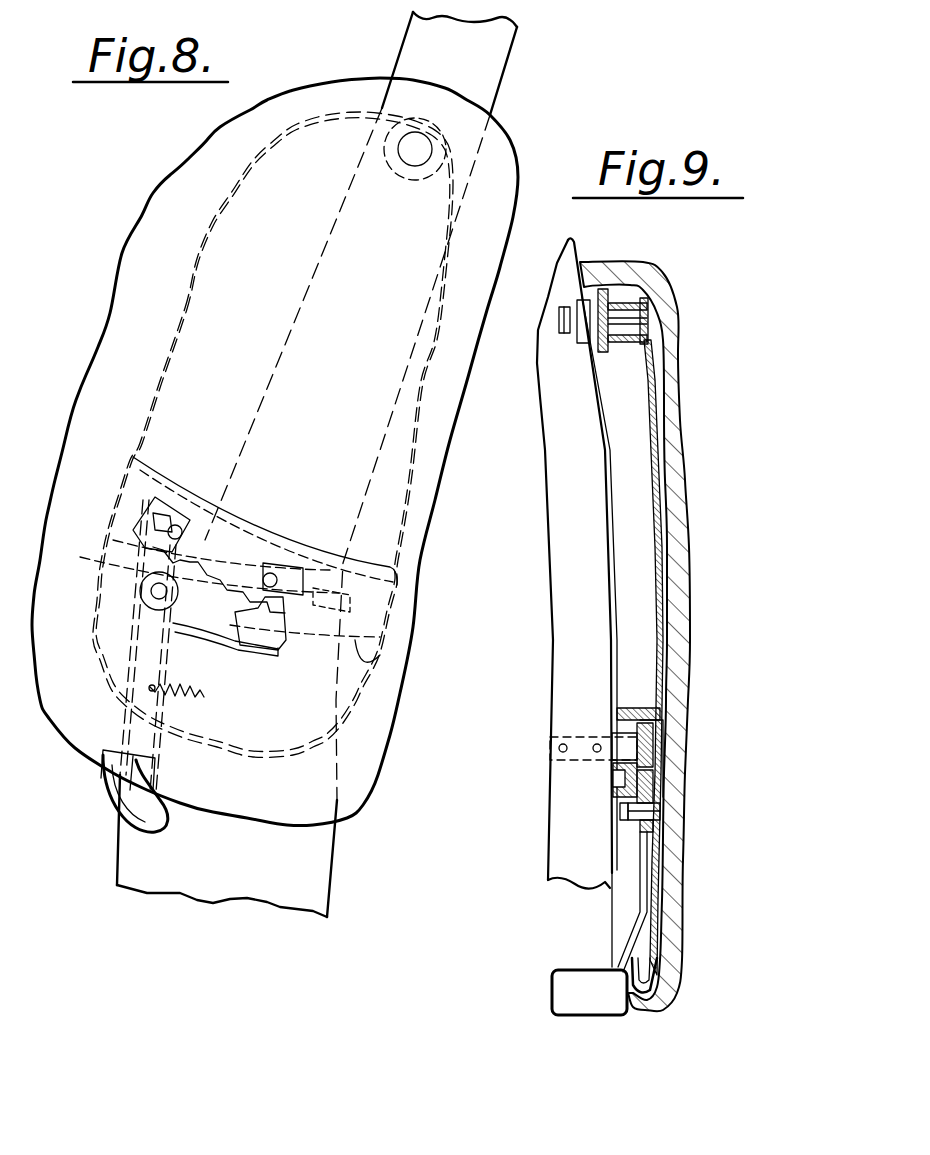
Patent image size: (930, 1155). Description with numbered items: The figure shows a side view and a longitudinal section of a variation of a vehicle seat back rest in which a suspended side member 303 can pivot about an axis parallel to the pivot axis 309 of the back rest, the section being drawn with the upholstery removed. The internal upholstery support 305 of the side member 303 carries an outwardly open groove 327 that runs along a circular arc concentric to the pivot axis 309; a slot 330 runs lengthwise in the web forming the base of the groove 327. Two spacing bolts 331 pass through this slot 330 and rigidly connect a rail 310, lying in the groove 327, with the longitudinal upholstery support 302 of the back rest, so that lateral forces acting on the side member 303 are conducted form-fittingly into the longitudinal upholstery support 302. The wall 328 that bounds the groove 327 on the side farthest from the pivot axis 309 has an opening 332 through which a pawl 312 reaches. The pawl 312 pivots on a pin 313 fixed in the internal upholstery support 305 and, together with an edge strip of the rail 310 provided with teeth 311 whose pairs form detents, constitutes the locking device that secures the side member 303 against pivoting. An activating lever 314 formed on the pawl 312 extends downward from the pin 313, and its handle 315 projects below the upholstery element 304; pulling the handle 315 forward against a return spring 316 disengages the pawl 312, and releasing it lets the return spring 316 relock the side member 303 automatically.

In FIG. 8, the longitudinal upholstery support 302 is at (503, 57).
In FIG. 9, the longitudinal upholstery support 302 is at (563, 421).
In FIG. 8, the side member 303 is at (513, 135).
In FIG. 9, the side member 303 is at (683, 343).
In FIG. 8, the upholstery element 304 is at (266, 812).
In FIG. 8, the internal upholstery support 305 is at (316, 118).
In FIG. 9, the internal upholstery support 305 is at (648, 390).
In FIG. 8, the pivot axis 309 is at (418, 142).
In FIG. 9, the pivot axis 309 is at (623, 317).
In FIG. 8, the rail 310 is at (150, 517).
In FIG. 9, the rail 310 is at (648, 740).
In FIG. 8, the teeth 311 is at (172, 558).
In FIG. 8, the pawl 312 is at (259, 645).
In FIG. 9, the pawl 312 is at (658, 790).
In FIG. 8, the pin 313 is at (150, 592).
In FIG. 9, the pin 313 is at (660, 812).
In FIG. 8, the activating lever 314 is at (123, 733).
In FIG. 9, the activating lever 314 is at (643, 880).
In FIG. 8, the handle 315 is at (113, 797).
In FIG. 9, the handle 315 is at (570, 975).
In FIG. 8, the return spring 316 is at (174, 704).
In FIG. 8, the groove 327 is at (400, 582).
In FIG. 9, the groove 327 is at (661, 724).
In FIG. 8, the wall 328 is at (357, 643).
In FIG. 9, the wall 328 is at (613, 784).
In FIG. 8, the slot 330 is at (313, 618).
In FIG. 8, the spacing bolts 331 is at (178, 526).
In FIG. 9, the spacing bolts 331 is at (618, 745).
In FIG. 8, the opening 332 is at (238, 618).